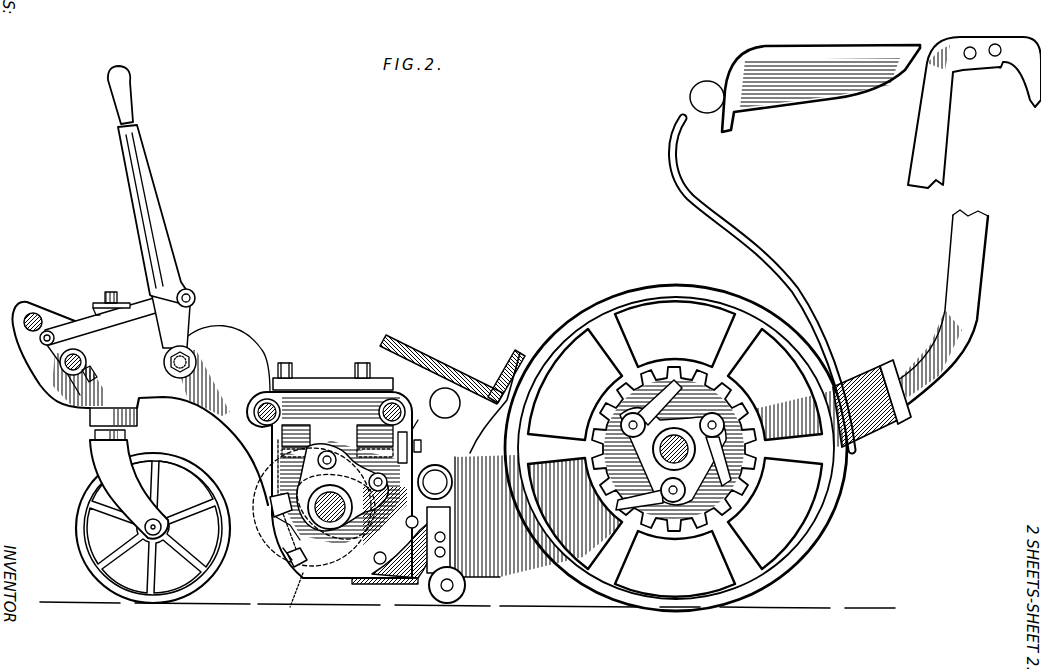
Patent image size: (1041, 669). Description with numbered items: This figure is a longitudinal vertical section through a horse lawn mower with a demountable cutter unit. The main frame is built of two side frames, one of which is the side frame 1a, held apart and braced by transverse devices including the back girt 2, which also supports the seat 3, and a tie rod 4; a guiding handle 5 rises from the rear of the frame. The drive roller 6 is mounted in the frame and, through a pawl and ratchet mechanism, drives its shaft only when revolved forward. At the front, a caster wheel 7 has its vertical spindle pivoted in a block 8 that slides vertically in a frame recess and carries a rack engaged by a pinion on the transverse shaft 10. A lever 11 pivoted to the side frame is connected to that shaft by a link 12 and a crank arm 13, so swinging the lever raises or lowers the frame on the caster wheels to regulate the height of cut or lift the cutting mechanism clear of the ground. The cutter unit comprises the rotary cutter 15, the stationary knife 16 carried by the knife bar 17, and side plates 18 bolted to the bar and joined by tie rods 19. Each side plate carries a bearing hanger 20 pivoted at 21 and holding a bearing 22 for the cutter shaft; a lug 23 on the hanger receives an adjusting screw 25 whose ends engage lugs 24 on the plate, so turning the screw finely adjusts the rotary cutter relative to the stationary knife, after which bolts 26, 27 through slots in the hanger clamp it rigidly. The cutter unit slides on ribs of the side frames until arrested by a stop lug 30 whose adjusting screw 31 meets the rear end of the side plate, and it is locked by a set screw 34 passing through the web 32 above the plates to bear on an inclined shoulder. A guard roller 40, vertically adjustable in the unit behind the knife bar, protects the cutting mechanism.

The side frame 1a is at (247, 323).
The back girt 2 is at (897, 427).
The seat 3 is at (825, 90).
The tie rod 4 is at (32, 313).
The guiding handle 5 is at (1000, 70).
The drive roller 6 is at (647, 284).
The caster wheel 7 is at (78, 535).
The block 8 is at (92, 422).
The transverse shaft 10 is at (70, 367).
The lever 11 is at (160, 208).
The link 12 is at (80, 322).
The crank arm 13 is at (45, 347).
The rotary cutter 15 is at (285, 600).
The stationary knife 16 is at (362, 585).
The knife bar 17 is at (402, 590).
The side plate 18 is at (317, 403).
The tie rod 19 is at (258, 405).
The bearing hanger 20 is at (347, 540).
The pivot 21 is at (450, 470).
The bearing 22 is at (273, 482).
The lug 23 is at (290, 525).
The lug 24 is at (287, 507).
The adjusting screw 25 is at (283, 560).
The bolt 26 is at (330, 452).
The bolt 27 is at (370, 482).
The stop lug 30 is at (407, 433).
The adjusting screw 31 is at (421, 447).
The web 32 is at (300, 380).
The set screw 34 is at (280, 368).
The guard roller 40 is at (450, 598).